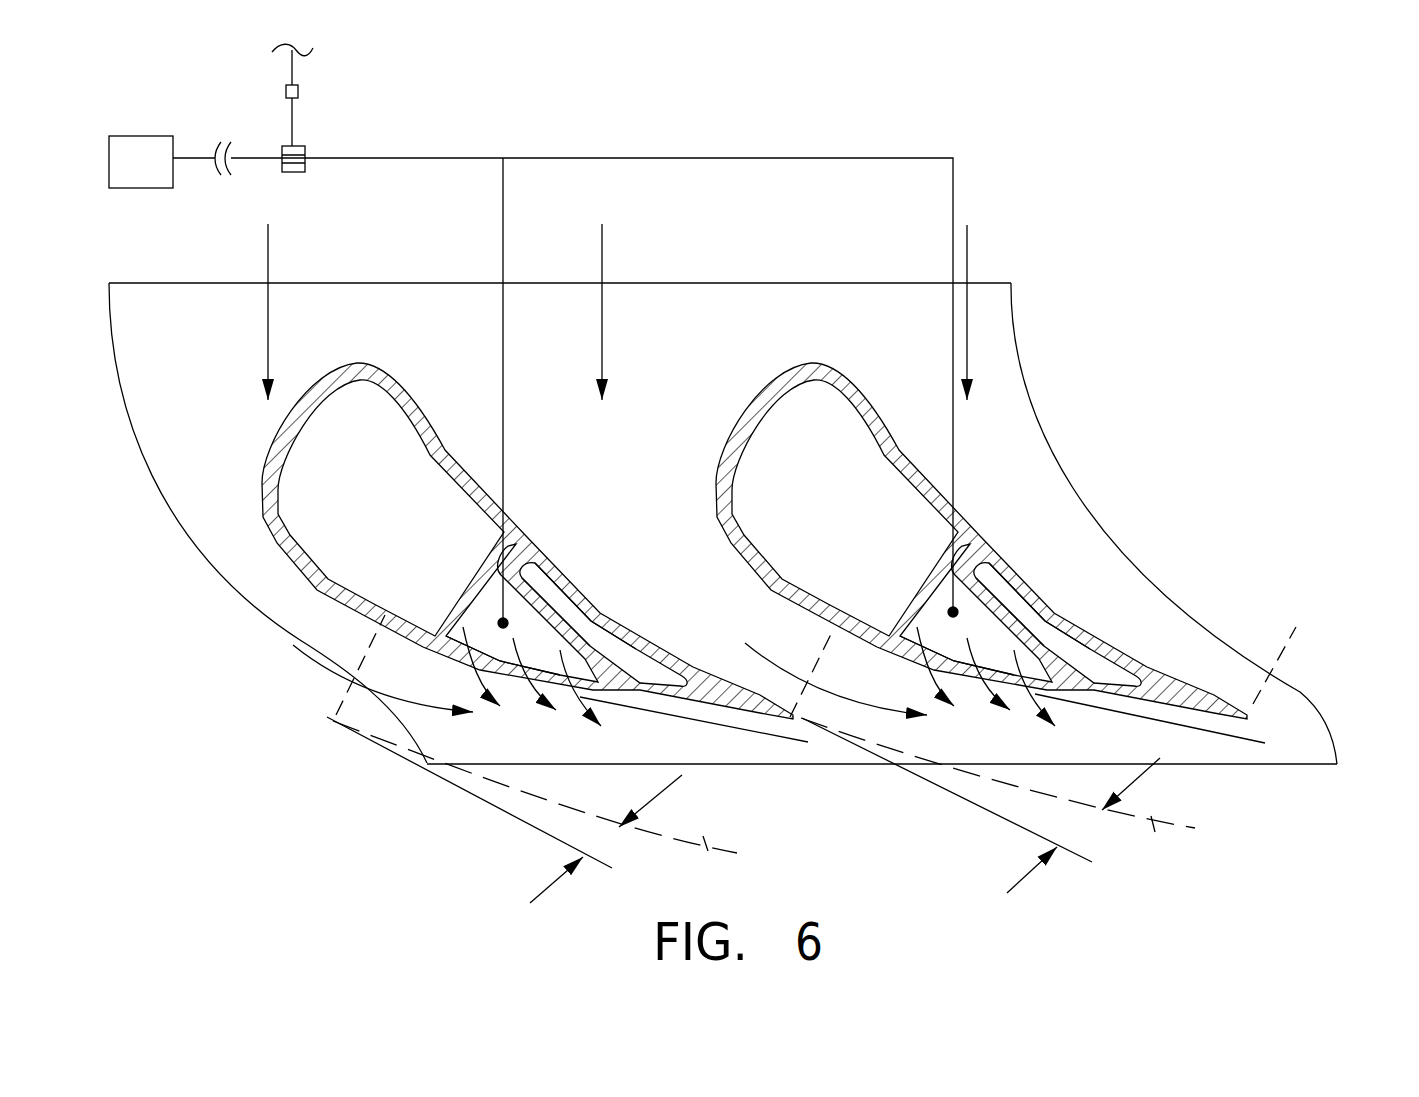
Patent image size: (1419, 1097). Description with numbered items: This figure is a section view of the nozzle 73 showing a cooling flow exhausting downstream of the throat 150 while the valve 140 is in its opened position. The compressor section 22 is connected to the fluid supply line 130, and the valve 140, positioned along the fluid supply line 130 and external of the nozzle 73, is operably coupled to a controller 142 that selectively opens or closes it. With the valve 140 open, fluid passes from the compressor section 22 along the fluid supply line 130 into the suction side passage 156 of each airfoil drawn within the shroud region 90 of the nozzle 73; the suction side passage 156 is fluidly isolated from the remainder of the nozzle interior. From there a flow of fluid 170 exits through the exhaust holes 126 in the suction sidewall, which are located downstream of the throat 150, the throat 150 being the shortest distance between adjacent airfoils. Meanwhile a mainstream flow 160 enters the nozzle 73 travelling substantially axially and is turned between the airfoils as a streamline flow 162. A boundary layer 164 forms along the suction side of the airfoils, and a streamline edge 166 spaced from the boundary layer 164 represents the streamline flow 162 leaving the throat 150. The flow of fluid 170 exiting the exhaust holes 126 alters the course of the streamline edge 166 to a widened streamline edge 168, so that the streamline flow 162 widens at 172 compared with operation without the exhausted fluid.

The compressor section 22 is at (160, 174).
The nozzle 73 is at (989, 349).
The shroud 90 is at (735, 288).
The exhaust holes 126 is at (458, 652).
The fluid supply line 130 is at (535, 159).
The valve 140 is at (290, 146).
The controller 142 is at (299, 91).
The throat 150 is at (340, 698).
The suction side passage 156 is at (553, 652).
The mainstream flow 160 is at (268, 248).
The streamline flow 162 is at (307, 652).
The boundary layer 164 is at (678, 718).
The streamline edge 166 is at (706, 845).
The widened streamline edge 168 is at (467, 790).
The flow of fluid 170 is at (437, 620).
The widening of the streamline flow 172 is at (548, 887).